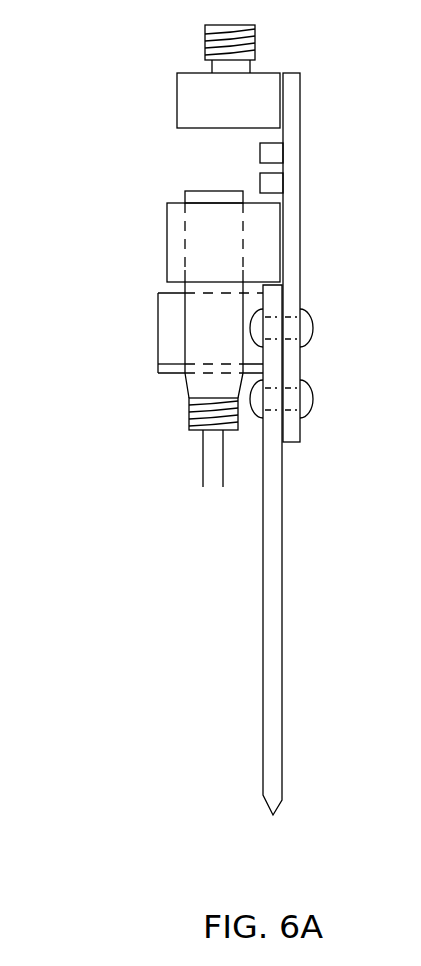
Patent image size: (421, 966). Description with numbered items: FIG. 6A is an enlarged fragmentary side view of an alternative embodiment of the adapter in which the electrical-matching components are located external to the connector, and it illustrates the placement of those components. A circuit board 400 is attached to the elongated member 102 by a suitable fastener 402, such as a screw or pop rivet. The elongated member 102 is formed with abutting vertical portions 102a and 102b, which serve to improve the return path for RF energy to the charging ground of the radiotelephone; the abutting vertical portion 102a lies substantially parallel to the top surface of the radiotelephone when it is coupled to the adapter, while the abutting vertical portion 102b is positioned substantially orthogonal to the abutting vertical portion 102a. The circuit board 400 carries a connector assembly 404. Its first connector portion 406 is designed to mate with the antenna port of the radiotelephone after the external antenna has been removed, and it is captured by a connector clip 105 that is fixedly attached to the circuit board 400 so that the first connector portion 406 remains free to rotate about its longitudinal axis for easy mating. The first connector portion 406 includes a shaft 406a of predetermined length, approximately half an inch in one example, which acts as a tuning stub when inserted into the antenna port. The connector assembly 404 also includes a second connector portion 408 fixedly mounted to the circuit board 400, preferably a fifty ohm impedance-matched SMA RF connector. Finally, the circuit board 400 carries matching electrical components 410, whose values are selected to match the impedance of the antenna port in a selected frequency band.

The connector assembly 404 is at (96, 177).
The second connector portion 408 is at (257, 73).
The circuit board 400 is at (300, 237).
The matching electrical components 410 is at (238, 161).
The connector clip 105 is at (167, 248).
The abutting vertical portion 102b is at (158, 320).
The abutting vertical portion 102a is at (158, 366).
The elongated member 102 is at (282, 558).
The fastener 402 is at (313, 322).
The first connector portion 406 is at (189, 405).
The shaft 406a is at (203, 462).